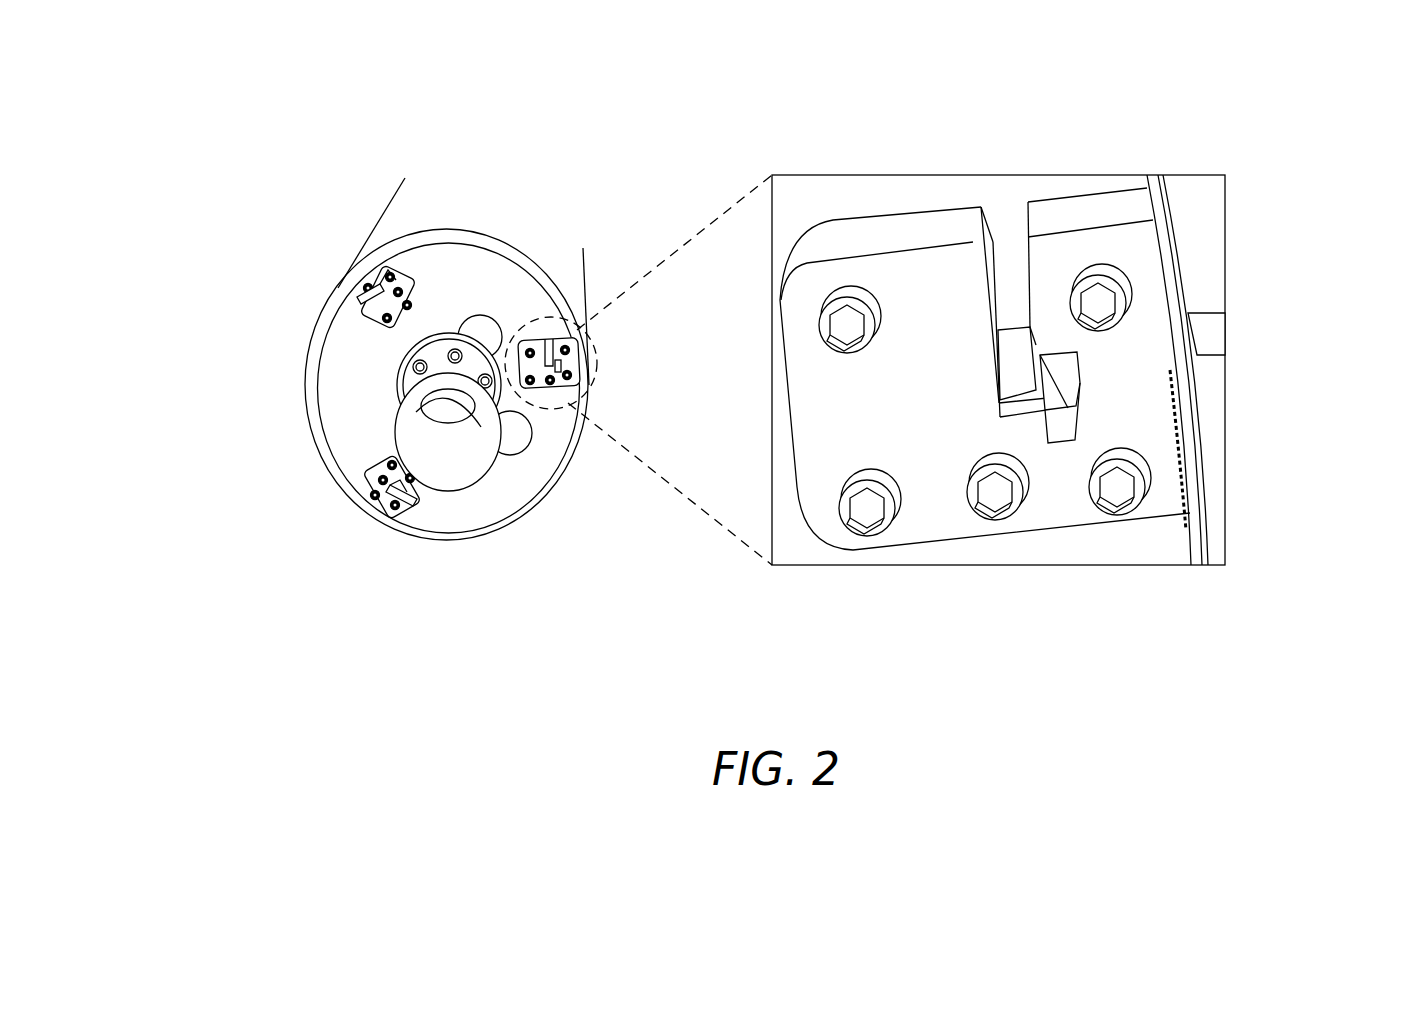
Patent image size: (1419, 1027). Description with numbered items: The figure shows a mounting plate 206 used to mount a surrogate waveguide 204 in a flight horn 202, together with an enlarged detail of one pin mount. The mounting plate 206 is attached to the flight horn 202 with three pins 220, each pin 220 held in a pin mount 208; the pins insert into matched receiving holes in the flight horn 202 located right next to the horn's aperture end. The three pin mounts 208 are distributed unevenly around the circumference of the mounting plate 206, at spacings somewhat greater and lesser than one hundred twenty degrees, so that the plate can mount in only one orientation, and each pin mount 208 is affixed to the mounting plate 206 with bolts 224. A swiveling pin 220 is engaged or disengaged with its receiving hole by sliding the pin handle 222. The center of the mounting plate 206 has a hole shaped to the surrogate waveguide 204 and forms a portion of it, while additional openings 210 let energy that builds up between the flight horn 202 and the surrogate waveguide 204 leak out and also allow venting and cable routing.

The flight horn 202 is at (1374, 546).
The surrogate waveguide 204 is at (158, 454).
The mounting plate 206 is at (181, 366).
The pin mount 208 is at (546, 69).
The openings 210 is at (666, 152).
The pin 220 is at (1362, 154).
The pin handle 222 is at (1194, 96).
The bolts 224 is at (1116, 496).